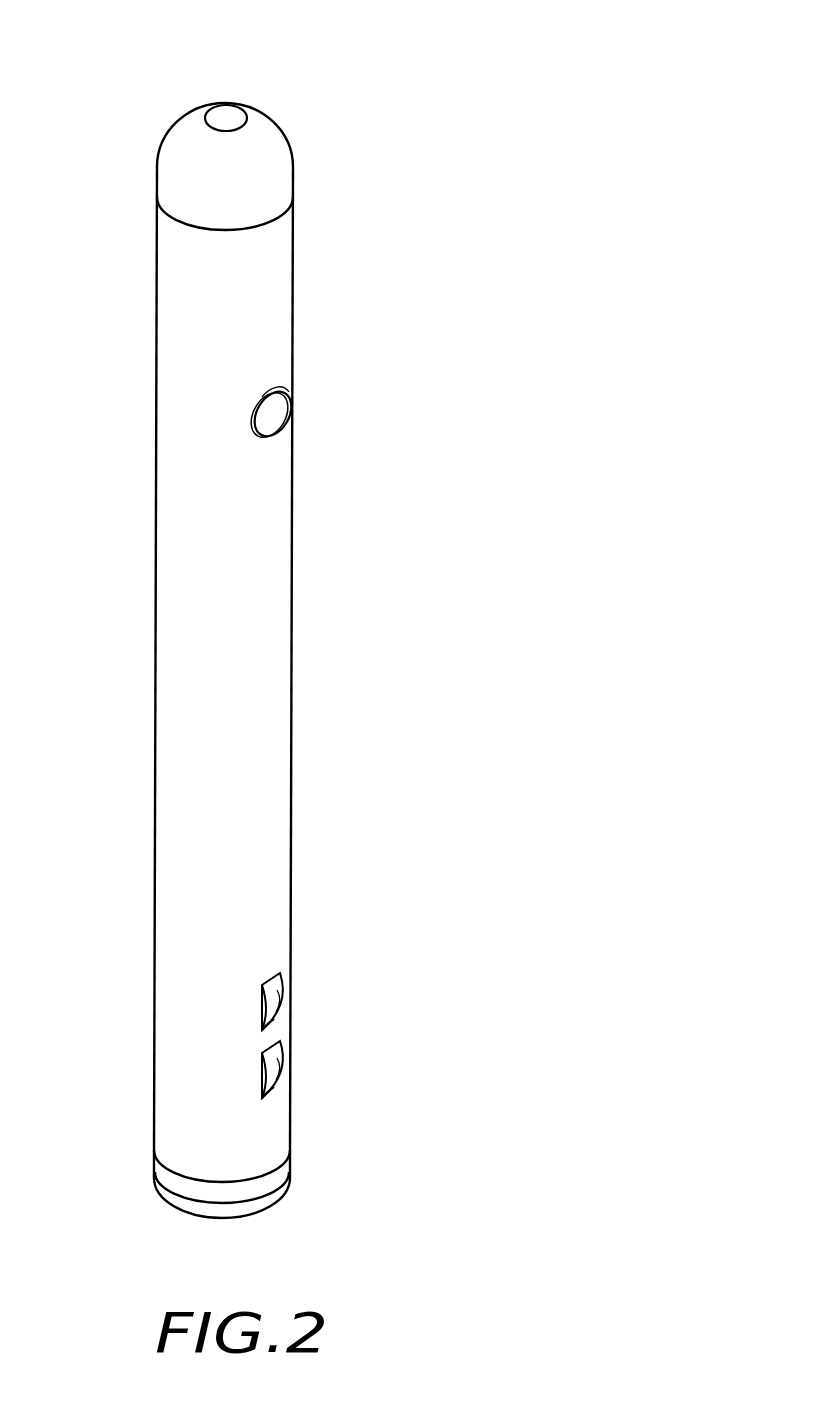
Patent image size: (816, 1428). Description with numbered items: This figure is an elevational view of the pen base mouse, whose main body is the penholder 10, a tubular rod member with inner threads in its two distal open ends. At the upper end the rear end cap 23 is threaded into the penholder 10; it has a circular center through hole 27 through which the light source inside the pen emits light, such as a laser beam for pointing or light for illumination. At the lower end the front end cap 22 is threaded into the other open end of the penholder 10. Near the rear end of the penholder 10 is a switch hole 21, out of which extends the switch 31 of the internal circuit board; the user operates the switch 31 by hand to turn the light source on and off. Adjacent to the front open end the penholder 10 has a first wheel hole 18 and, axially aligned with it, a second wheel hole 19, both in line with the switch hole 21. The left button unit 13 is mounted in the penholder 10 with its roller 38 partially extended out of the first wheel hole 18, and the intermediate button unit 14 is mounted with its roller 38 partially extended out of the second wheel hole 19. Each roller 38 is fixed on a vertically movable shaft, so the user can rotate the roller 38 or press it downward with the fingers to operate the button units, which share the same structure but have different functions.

The penholder 10 is at (291, 652).
The rear end cap 23 is at (283, 170).
The circular center through hole 27 is at (230, 113).
The switch 31 is at (282, 408).
The switch hole 21 is at (265, 393).
The intermediate button unit 14 is at (300, 1006).
The roller 38 is at (277, 992).
The second wheel hole 19 is at (272, 1020).
The left button unit 13 is at (295, 1088).
The first wheel hole 18 is at (280, 1097).
The front end cap 22 is at (173, 1178).